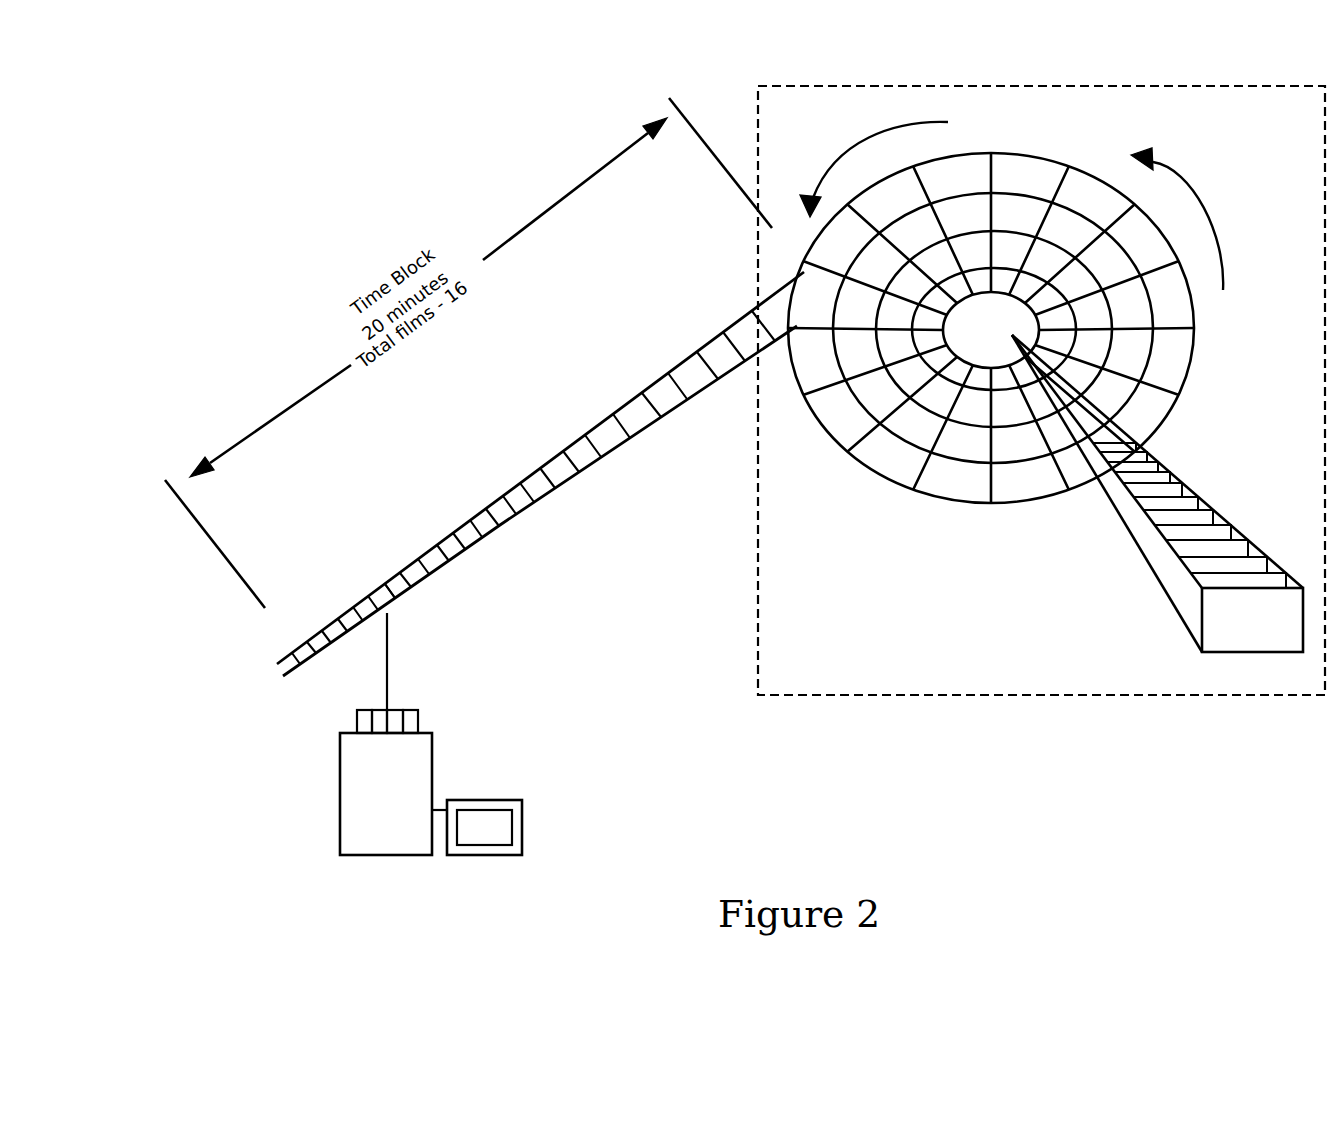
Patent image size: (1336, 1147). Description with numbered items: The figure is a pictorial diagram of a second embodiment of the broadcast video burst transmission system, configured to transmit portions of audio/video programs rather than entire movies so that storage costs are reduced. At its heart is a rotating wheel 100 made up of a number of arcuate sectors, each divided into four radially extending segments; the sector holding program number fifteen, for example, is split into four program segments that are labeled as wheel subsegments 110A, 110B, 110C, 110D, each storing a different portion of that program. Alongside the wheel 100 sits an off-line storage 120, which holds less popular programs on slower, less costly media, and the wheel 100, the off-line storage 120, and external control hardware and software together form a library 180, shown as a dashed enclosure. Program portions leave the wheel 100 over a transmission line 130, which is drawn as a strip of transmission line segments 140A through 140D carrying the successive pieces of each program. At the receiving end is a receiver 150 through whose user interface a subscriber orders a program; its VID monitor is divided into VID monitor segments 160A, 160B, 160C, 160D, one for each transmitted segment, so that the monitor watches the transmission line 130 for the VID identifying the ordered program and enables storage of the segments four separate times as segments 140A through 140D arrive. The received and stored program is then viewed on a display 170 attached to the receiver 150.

The wheel 100 is at (864, 517).
The wheel subsegment 110A is at (955, 493).
The wheel subsegment 110B is at (970, 457).
The wheel subsegment 110C is at (985, 422).
The wheel subsegment 110D is at (990, 383).
The off-line storage 120 is at (1162, 588).
The transmission line 130 is at (645, 469).
The transmission line segment 140A is at (620, 404).
The transmission line segment 140D is at (366, 597).
The receiver 150 is at (340, 842).
The VID monitor segment 160A is at (357, 720).
The VID monitor segment 160B is at (378, 708).
The VID monitor segment 160C is at (393, 710).
The VID monitor segment 160D is at (418, 718).
The display 170 is at (492, 856).
The library 180 is at (940, 696).